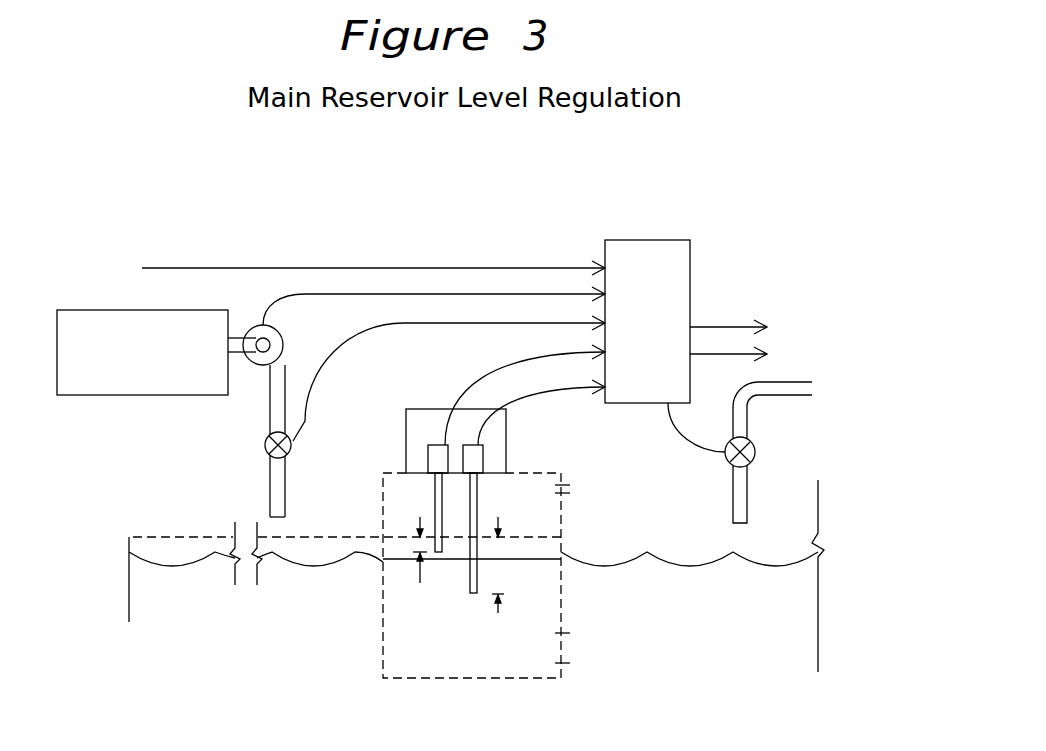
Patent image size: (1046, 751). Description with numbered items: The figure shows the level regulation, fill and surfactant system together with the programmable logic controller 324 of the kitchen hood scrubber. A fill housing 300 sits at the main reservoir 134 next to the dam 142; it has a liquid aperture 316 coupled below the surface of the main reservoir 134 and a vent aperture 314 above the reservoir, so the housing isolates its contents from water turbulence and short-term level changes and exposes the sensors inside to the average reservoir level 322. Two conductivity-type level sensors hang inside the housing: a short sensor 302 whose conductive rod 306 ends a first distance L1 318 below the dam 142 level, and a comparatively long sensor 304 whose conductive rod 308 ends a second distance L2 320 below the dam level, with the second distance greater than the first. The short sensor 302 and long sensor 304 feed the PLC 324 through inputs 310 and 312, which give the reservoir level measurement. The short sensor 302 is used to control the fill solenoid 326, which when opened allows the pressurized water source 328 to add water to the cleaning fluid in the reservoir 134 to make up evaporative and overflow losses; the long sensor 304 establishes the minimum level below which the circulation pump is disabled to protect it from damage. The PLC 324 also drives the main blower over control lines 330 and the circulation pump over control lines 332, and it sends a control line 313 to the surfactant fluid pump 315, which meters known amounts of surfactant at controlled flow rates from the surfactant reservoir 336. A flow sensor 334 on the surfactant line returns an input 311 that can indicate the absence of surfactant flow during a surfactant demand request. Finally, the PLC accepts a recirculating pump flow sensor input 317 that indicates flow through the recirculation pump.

The main reservoir 134 is at (647, 557).
The dam 142 is at (128, 568).
The fill housing 300 is at (384, 678).
The short sensor 302 is at (427, 443).
The long sensor 304 is at (487, 443).
The conductive rod 306 is at (433, 502).
The conductive rod 308 is at (477, 515).
The PLC input 310 is at (525, 386).
The input 311 is at (449, 369).
The PLC input 312 is at (541, 404).
The control line 313 is at (434, 296).
The vent aperture 314 is at (570, 490).
The surfactant fluid pump 315 is at (285, 347).
The liquid aperture 316 is at (570, 653).
The recirculating pump flow sensor input 317 is at (365, 258).
The first distance L1 318 is at (417, 570).
The second distance L2 320 is at (508, 593).
The average reservoir level 322 is at (400, 560).
The programmable logic controller 324 is at (647, 321).
The fill solenoid 326 is at (728, 462).
The pressurized water source 328 is at (810, 443).
The control lines 330 is at (792, 318).
The control lines 332 is at (787, 345).
The flow sensor 334 is at (265, 445).
The surfactant reservoir 336 is at (142, 354).